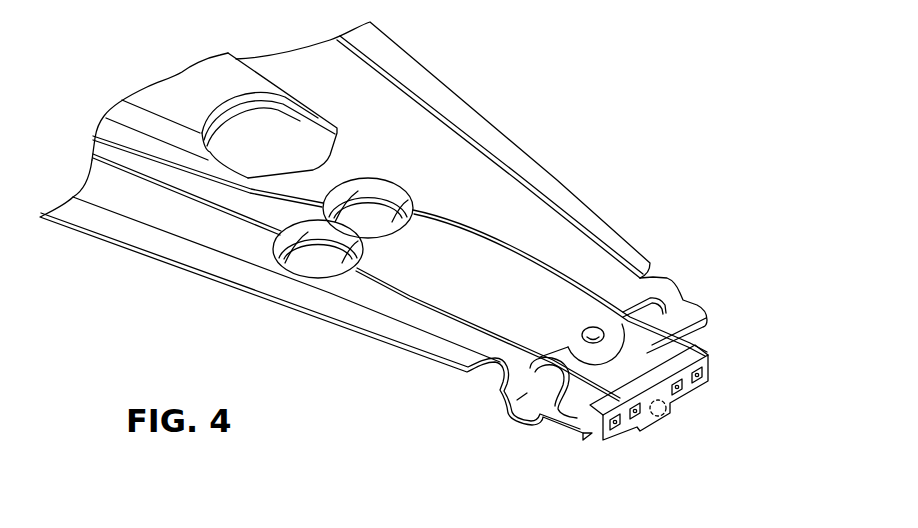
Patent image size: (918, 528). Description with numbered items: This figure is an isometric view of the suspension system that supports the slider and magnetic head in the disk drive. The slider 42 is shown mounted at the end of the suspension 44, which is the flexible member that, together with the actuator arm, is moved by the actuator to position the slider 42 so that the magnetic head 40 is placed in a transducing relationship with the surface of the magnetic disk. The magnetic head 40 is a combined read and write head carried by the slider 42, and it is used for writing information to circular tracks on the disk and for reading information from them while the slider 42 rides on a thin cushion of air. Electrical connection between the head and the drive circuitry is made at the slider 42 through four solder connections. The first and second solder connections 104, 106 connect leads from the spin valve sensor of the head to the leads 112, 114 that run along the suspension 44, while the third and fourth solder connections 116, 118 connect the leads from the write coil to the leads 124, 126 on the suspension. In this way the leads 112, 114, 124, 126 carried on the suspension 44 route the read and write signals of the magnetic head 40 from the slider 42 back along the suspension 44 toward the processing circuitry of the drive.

The suspension 44 is at (511, 141).
The lead 114 is at (570, 272).
The lead 126 is at (490, 240).
The lead 124 is at (433, 302).
The lead 112 is at (386, 286).
The slider 42 is at (553, 430).
The first solder connection 104 is at (610, 428).
The third solder connection 116 is at (633, 420).
The fourth solder connection 118 is at (682, 388).
The second solder connection 106 is at (702, 375).
The magnetic head 40 is at (668, 417).